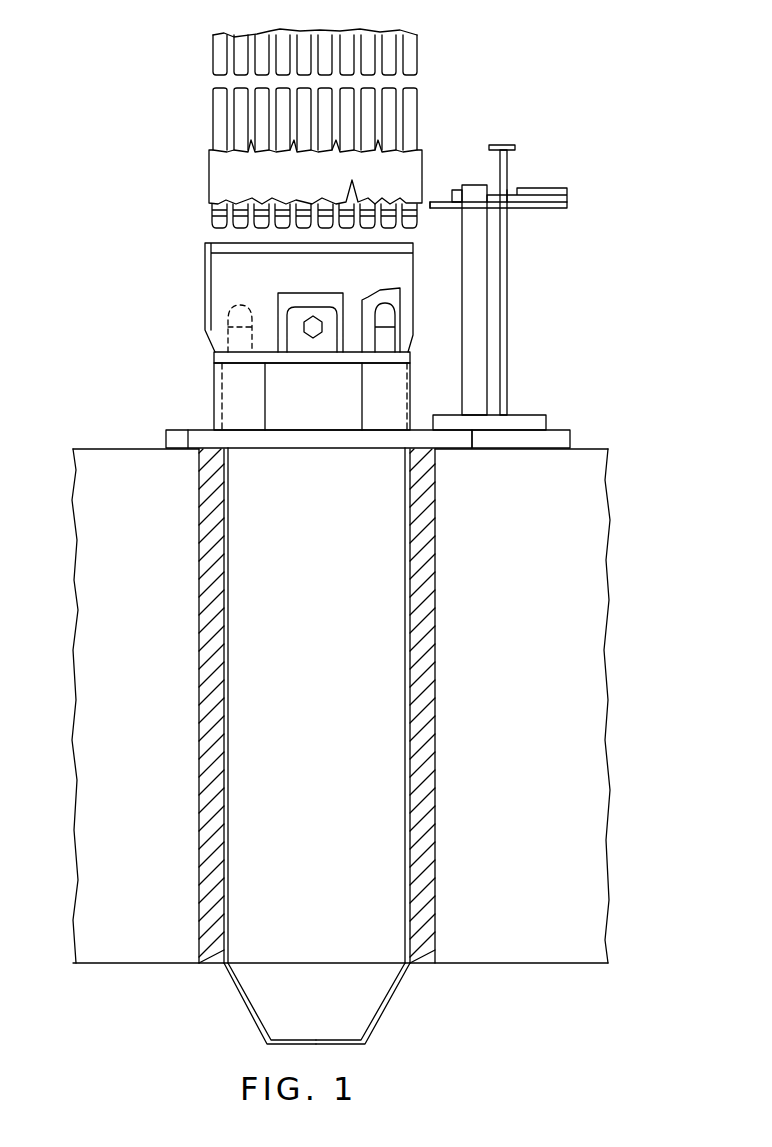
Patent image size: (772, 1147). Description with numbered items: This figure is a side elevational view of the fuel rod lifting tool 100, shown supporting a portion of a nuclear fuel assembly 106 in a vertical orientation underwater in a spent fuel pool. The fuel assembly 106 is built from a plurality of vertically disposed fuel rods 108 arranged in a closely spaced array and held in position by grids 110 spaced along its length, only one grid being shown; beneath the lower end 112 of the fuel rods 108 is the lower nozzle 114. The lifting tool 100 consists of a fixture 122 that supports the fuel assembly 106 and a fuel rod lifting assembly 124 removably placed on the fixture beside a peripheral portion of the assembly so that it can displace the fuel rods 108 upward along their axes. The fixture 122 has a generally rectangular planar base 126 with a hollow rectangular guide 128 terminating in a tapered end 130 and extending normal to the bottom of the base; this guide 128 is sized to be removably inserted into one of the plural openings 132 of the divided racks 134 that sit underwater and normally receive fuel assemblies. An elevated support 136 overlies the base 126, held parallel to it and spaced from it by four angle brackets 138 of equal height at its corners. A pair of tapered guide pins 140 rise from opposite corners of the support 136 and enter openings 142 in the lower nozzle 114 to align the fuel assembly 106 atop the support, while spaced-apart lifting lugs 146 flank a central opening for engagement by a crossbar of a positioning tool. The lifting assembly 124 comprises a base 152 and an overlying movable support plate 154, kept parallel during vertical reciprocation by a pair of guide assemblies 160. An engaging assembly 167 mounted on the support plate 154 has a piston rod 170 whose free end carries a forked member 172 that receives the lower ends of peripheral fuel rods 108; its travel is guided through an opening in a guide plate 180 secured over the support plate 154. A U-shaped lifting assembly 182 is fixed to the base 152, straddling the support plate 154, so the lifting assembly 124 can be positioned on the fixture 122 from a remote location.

The fuel rod lifting tool 100 is at (531, 259).
The nuclear fuel assembly 106 is at (316, 44).
The fuel rods 108 is at (213, 52).
The grids 110 is at (209, 175).
The lower end of the fuel rods 112 is at (212, 216).
The lower nozzle 114 is at (205, 285).
The fixture 122 is at (174, 430).
The fuel rod lifting assembly 124 is at (527, 251).
The base 126 is at (560, 430).
The hollow rectangular guide 128 is at (232, 880).
The tapered end 130 is at (398, 990).
The openings 132 is at (225, 965).
The divided racks 134 is at (90, 612).
The elevated support 136 is at (354, 359).
The angle brackets 138 is at (248, 408).
The tapered guide pins 140 is at (250, 318).
The openings 142 is at (398, 300).
The lifting lugs 146 is at (298, 310).
The base 152 is at (530, 415).
The movable support plate 154 is at (567, 206).
The guide assemblies 160 is at (483, 280).
The engaging assembly 167 is at (527, 188).
The piston rod 170 is at (510, 190).
The forked member 172 is at (433, 200).
The guide plate 180 is at (454, 190).
The U-shaped lifting assembly 182 is at (500, 145).